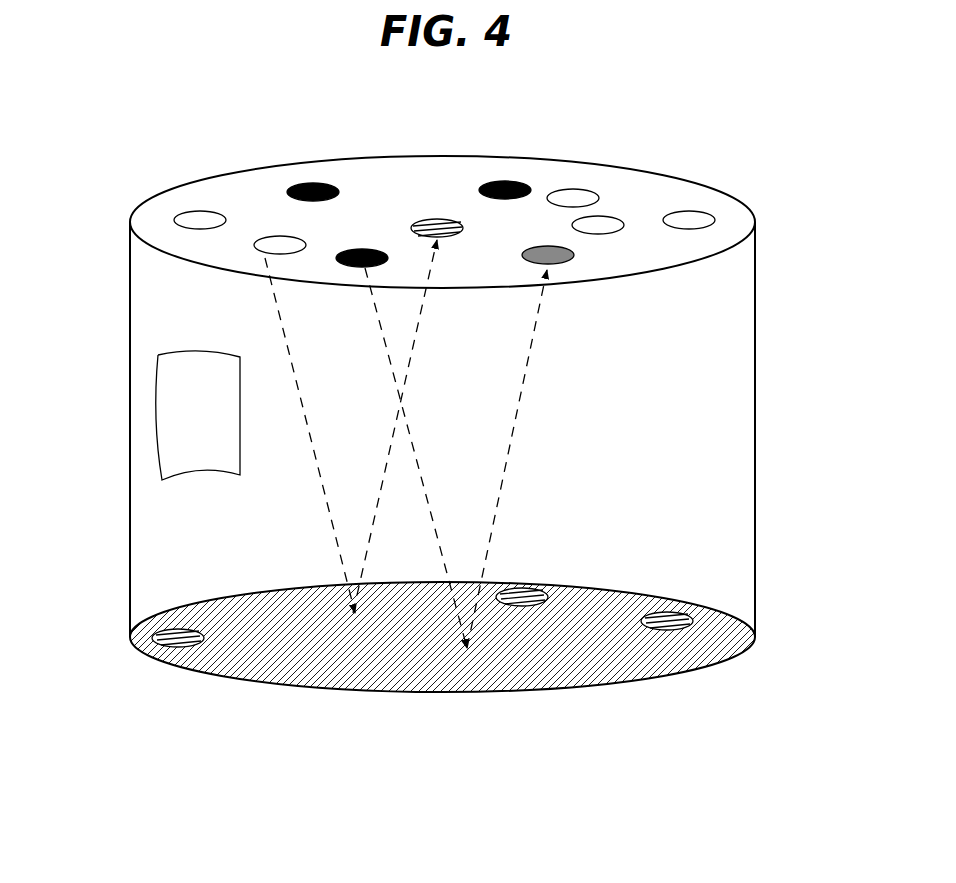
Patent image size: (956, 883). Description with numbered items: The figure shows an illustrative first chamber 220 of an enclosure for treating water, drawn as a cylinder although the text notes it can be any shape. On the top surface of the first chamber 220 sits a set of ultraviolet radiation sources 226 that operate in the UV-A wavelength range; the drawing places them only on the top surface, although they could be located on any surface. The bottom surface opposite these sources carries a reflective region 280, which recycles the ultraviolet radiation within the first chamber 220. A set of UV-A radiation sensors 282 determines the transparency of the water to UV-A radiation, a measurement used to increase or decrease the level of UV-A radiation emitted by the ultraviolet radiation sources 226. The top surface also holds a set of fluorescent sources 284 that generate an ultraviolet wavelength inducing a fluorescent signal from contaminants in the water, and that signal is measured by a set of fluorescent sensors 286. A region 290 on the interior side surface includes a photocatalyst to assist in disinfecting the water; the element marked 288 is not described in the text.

The first chamber 220 is at (568, 160).
The set of ultraviolet radiation sources 226 is at (280, 236).
The reflective region 280 is at (560, 667).
The set of UV-A radiation sensors 282 is at (668, 630).
The set of fluorescent sources 284 is at (365, 249).
The set of fluorescent sensors 286 is at (572, 258).
The hatched region 288 is at (436, 219).
The region 290 is at (162, 423).